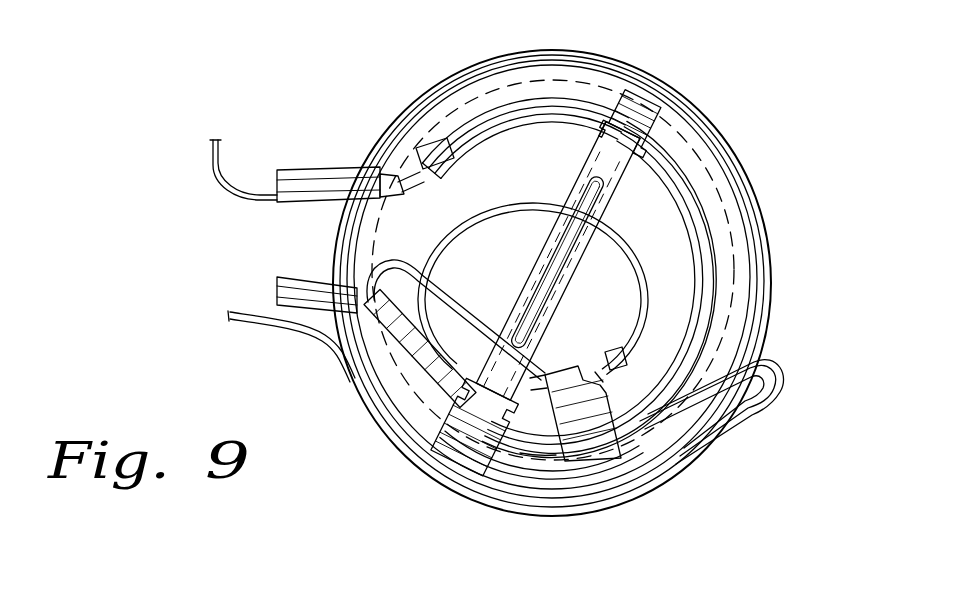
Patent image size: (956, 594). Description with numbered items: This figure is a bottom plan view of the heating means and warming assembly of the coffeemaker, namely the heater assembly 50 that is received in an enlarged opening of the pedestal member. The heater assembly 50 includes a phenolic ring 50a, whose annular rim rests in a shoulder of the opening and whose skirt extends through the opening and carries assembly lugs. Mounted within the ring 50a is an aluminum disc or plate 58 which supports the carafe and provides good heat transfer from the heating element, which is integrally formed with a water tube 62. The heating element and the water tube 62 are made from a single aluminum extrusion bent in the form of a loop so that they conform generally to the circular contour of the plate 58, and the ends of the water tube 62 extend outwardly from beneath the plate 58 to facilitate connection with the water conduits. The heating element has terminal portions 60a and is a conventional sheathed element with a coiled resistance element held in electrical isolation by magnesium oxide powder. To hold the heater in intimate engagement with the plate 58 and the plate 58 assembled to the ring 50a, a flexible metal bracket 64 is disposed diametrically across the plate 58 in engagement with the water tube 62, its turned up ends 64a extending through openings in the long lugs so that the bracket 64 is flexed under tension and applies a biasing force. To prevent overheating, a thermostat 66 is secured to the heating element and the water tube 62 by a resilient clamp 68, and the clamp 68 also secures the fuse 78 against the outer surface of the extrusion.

The heater assembly 50 is at (766, 214).
The phenolic ring 50a is at (627, 490).
The aluminum disc or plate 58 is at (612, 325).
The terminal portions 60a is at (388, 178).
The water tube 62 is at (478, 118).
The flexible metal bracket 64 is at (543, 258).
The turned up ends 64a is at (662, 92).
The thermostat 66 is at (690, 404).
The resilient clamp 68 is at (646, 432).
The fuse 78 is at (538, 467).